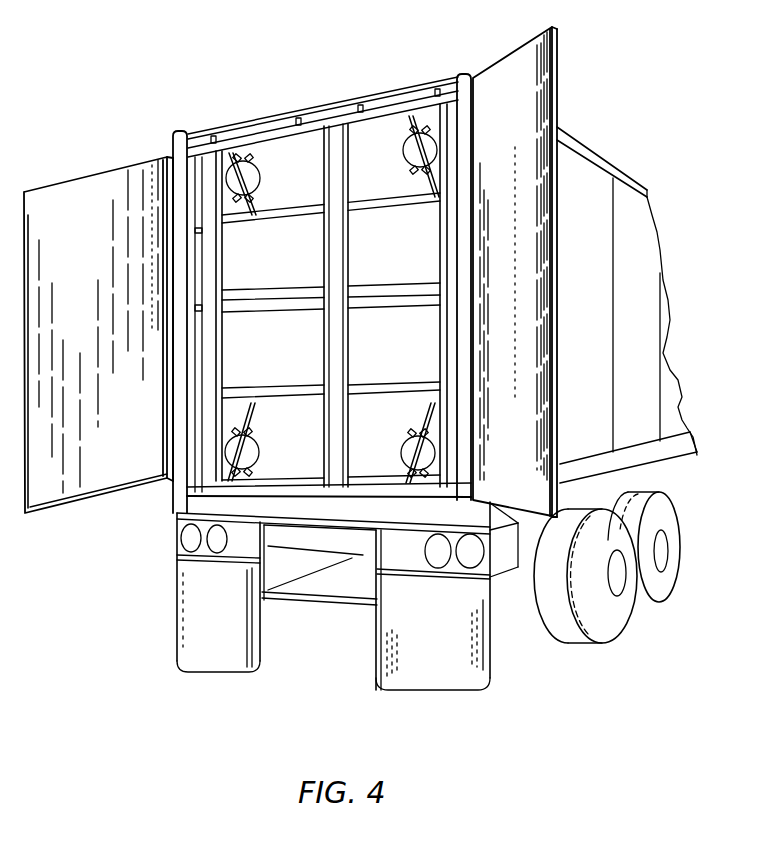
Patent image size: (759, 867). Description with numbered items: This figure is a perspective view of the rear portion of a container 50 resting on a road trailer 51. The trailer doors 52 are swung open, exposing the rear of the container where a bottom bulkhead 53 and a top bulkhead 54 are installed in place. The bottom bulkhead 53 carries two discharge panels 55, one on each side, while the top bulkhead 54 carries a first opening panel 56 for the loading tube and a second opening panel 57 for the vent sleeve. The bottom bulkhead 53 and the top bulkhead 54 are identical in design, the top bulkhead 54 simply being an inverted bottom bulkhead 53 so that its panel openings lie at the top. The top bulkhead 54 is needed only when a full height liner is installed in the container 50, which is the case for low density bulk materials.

The container 50 is at (600, 180).
The road trailer 51 is at (495, 570).
The trailer doors 52 is at (70, 192).
The bottom bulkhead 53 is at (406, 358).
The top bulkhead 54 is at (404, 263).
The discharge panels 55 is at (262, 448).
The first opening panel 56 is at (247, 152).
The second opening panel 57 is at (405, 128).